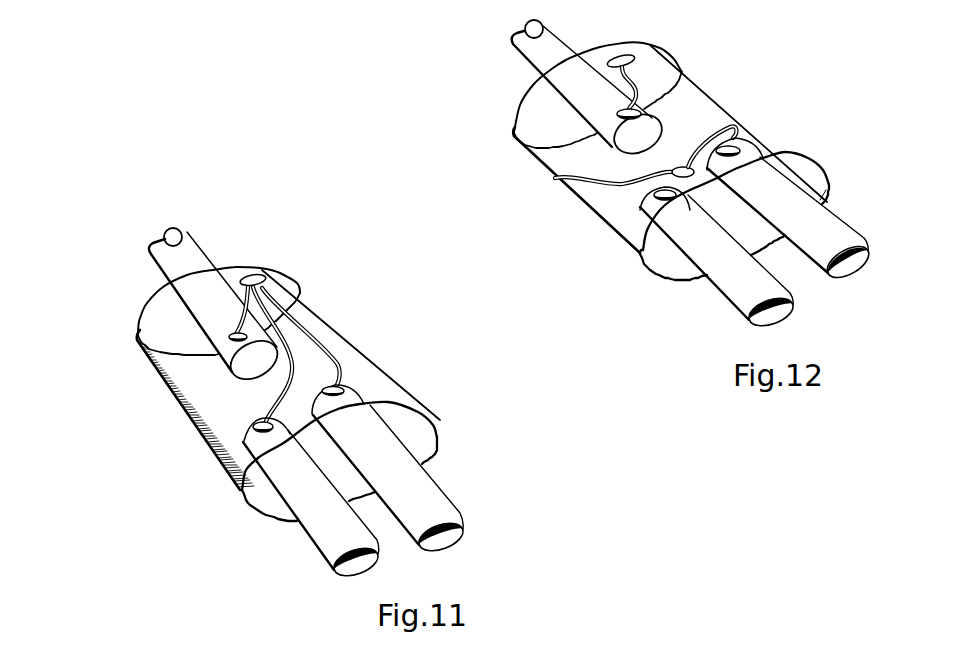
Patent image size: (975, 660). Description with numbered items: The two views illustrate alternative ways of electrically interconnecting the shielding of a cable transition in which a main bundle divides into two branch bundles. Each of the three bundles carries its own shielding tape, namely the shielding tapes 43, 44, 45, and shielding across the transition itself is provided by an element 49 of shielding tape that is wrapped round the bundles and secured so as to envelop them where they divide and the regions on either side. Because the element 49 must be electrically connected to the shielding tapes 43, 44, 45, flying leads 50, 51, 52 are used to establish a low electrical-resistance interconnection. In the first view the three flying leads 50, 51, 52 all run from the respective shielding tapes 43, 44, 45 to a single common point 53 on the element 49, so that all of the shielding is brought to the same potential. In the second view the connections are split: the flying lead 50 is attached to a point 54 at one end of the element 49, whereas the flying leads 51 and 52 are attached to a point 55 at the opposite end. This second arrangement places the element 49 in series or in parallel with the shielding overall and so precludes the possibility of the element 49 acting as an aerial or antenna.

In FIG. 11, the shielding tape 43 is at (170, 268).
In FIG. 12, the shielding tape 43 is at (525, 48).
In FIG. 11, the shielding tape 44 is at (322, 532).
In FIG. 12, the shielding tape 44 is at (737, 288).
In FIG. 11, the shielding tape 45 is at (440, 502).
In FIG. 12, the shielding tape 45 is at (848, 233).
In FIG. 11, the element of shielding tape 49 is at (412, 393).
In FIG. 12, the element of shielding tape 49 is at (586, 212).
In FIG. 11, the flying lead 50 is at (234, 280).
In FIG. 12, the flying lead 50 is at (642, 76).
In FIG. 11, the flying lead 51 is at (258, 410).
In FIG. 12, the flying lead 51 is at (556, 177).
In FIG. 11, the flying lead 52 is at (334, 381).
In FIG. 12, the flying lead 52 is at (738, 127).
In FIG. 11, the common point 53 is at (268, 275).
In FIG. 12, the point 54 is at (632, 51).
In FIG. 12, the point 55 is at (820, 200).